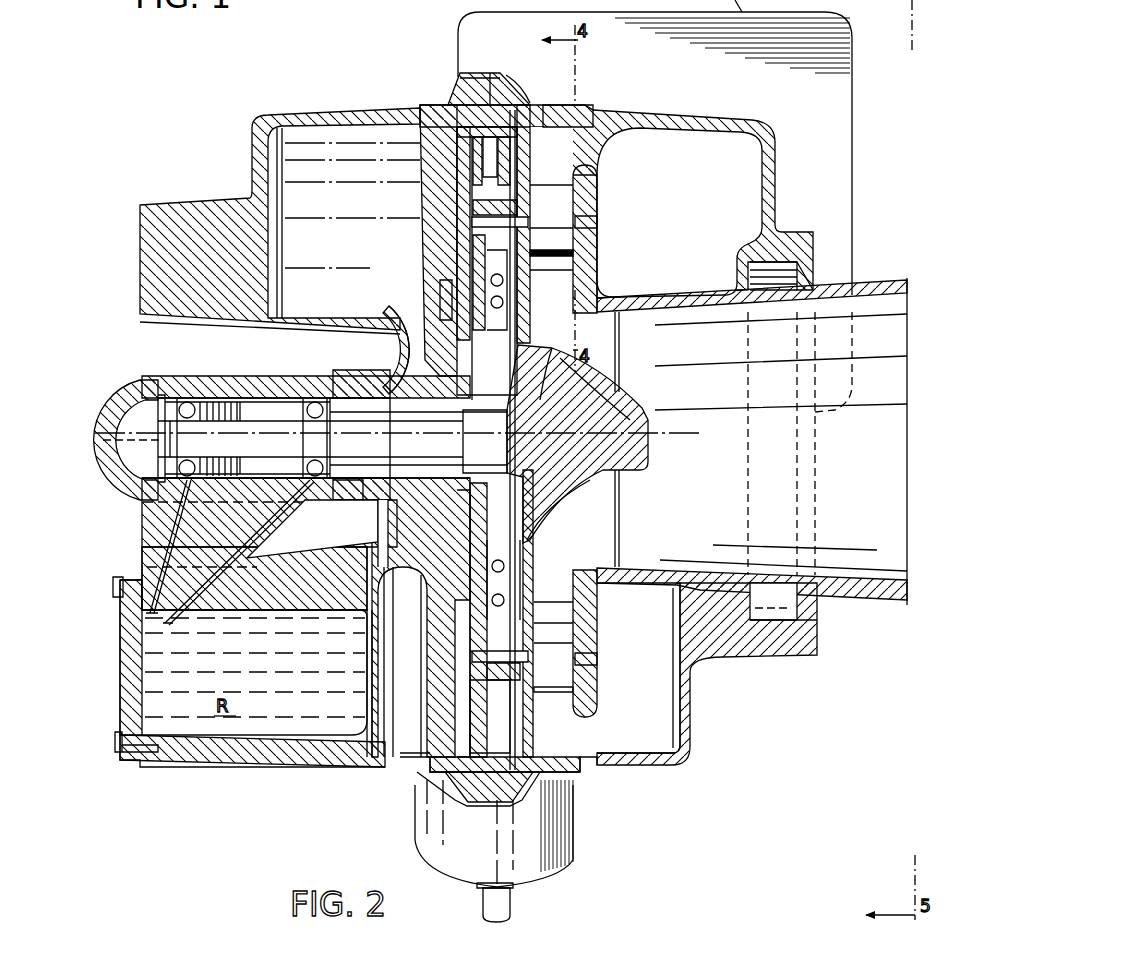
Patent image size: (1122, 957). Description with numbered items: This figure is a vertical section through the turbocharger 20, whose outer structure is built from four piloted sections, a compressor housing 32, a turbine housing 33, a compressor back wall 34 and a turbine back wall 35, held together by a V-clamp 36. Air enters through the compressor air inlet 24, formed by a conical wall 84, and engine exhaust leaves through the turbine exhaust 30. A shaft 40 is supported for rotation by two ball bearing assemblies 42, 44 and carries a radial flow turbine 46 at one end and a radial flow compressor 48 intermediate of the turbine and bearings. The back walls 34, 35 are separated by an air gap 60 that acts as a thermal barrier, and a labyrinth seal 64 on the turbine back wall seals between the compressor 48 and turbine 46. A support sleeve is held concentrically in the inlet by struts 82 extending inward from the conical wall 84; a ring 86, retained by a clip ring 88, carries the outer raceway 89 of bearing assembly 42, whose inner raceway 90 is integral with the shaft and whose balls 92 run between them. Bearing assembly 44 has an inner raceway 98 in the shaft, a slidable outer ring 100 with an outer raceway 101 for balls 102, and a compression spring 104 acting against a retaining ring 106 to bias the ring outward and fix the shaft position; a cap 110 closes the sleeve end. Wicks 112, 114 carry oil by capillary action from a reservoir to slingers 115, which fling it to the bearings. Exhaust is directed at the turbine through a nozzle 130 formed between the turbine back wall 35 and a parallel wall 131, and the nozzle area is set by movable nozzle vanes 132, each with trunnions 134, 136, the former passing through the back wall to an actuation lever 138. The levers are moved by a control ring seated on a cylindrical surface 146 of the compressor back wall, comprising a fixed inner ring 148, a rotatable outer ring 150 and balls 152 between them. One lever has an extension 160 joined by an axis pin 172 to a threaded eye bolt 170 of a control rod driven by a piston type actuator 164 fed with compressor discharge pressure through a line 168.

The turbocharger 20 is at (246, 95).
The compressor air inlet 24 is at (138, 322).
The turbine exhaust 30 is at (883, 278).
The compressor housing 32 is at (323, 114).
The turbine housing 33 is at (670, 112).
The compressor back wall 34 is at (438, 116).
The turbine back wall 35 is at (553, 120).
The V-clamp 36 is at (490, 73).
The shaft 40 is at (275, 447).
The ball bearing assembly 42 is at (368, 396).
The ball bearing assembly 44 is at (170, 412).
The radial flow turbine 46 is at (642, 410).
The radial flow compressor 48 is at (430, 347).
The air gap 60 is at (495, 128).
The labyrinth seal 64 is at (548, 360).
The struts 82 is at (262, 524).
The conical wall 84 is at (195, 314).
The ring 86 is at (322, 400).
The clip ring 88 is at (308, 400).
The outer raceway 89 is at (365, 372).
The inner raceway 90 is at (322, 421).
The balls 92 is at (316, 485).
The inner raceway 98 is at (175, 440).
The outer ring 100 is at (200, 400).
The outer raceway 101 is at (188, 400).
The balls 102 is at (192, 466).
The compression spring 104 is at (243, 405).
The retaining ring 106 is at (240, 400).
The cap 110 is at (83, 455).
The wick 112 is at (152, 630).
The wick 114 is at (172, 612).
The slingers 115 is at (180, 462).
The nozzle 130 is at (568, 170).
The wall 131 is at (597, 172).
The nozzle vanes 132 is at (562, 218).
The trunnion 134 is at (528, 224).
The trunnion 136 is at (597, 222).
The actuation lever 138 is at (472, 222).
The cylindrical surface 146 is at (520, 306).
The inner ring 148 is at (410, 318).
The outer ring 150 is at (470, 285).
The balls 152 is at (446, 300).
The extension 160 is at (478, 202).
The piston type actuator 164 is at (575, 835).
The line 168 is at (512, 905).
The eye bolt 170 is at (478, 143).
The axis pin 172 is at (507, 158).